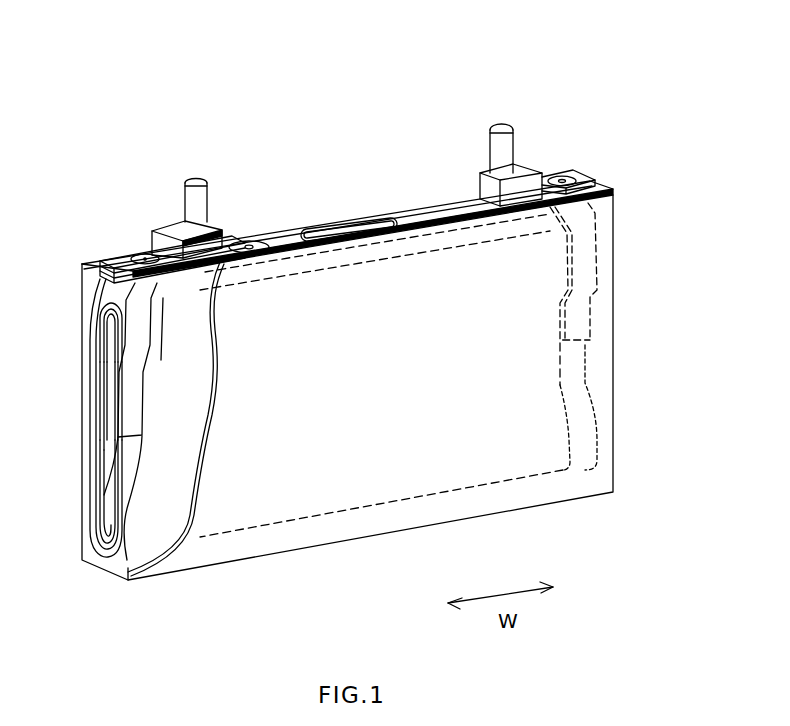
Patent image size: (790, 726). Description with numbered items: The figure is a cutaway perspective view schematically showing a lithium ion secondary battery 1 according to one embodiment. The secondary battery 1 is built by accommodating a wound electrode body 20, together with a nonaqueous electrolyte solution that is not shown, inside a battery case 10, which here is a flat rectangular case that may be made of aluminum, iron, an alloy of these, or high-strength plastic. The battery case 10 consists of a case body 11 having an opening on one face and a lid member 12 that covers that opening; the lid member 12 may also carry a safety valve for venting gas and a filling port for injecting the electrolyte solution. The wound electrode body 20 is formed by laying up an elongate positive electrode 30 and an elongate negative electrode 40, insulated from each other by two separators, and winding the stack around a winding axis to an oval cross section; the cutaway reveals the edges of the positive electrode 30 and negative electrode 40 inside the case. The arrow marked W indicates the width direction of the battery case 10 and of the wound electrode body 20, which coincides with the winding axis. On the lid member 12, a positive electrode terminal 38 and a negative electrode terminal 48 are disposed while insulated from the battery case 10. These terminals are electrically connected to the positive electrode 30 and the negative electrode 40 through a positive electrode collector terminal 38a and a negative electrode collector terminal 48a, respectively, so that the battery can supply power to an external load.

The secondary battery 1 is at (97, 132).
The battery case 10 is at (688, 166).
The case body 11 is at (610, 222).
The lid member 12 is at (606, 188).
The wound electrode body 20 is at (538, 393).
The positive electrode 30 is at (124, 478).
The positive electrode terminal 38 is at (197, 177).
The positive electrode collector terminal 38a is at (132, 395).
The negative electrode 40 is at (580, 433).
The negative electrode terminal 48 is at (500, 122).
The negative electrode collector terminal 48a is at (580, 323).